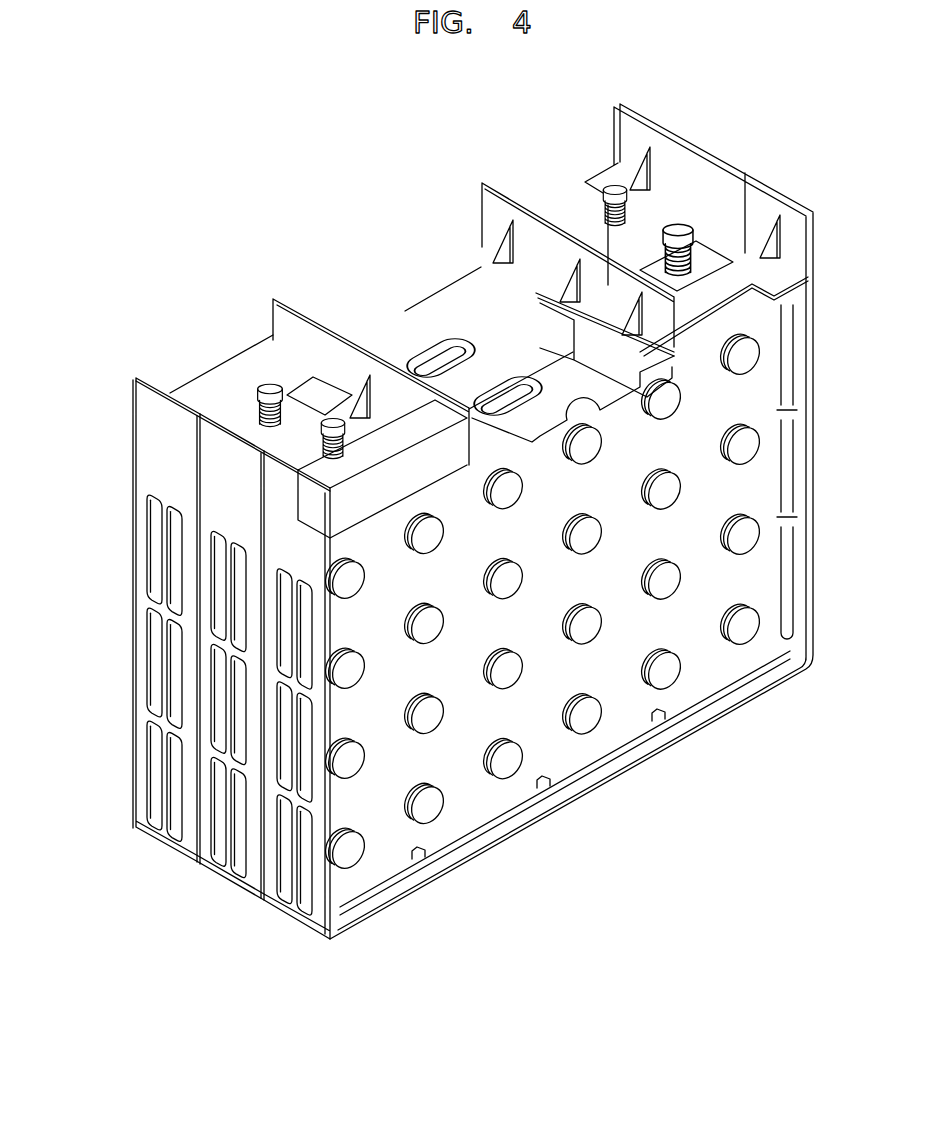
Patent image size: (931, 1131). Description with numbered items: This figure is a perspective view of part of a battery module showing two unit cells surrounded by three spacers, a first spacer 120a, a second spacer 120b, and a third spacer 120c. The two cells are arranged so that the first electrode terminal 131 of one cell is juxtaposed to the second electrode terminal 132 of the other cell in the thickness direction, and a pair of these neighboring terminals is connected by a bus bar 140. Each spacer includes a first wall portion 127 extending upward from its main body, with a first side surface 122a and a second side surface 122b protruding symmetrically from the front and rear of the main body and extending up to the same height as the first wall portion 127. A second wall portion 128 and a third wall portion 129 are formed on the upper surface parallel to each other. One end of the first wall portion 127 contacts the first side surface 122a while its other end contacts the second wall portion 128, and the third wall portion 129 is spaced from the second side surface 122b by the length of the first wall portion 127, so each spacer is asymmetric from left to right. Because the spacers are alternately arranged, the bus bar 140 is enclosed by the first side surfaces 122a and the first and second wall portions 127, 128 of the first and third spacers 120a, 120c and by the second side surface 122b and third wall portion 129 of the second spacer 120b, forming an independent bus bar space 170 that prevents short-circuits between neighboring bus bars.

The first spacer 120a is at (150, 437).
The second spacer 120b is at (230, 487).
The third spacer 120c is at (297, 525).
The first side surface 122a is at (158, 410).
The second side surface 122b is at (224, 463).
The first wall portion 127 is at (266, 384).
The second wall portion 128 is at (308, 382).
The third wall portion 129 is at (393, 350).
The first electrode terminal 131 is at (255, 402).
The second electrode terminal 132 is at (369, 347).
The bus bar 140 is at (238, 421).
The bus bar space 170 is at (316, 388).